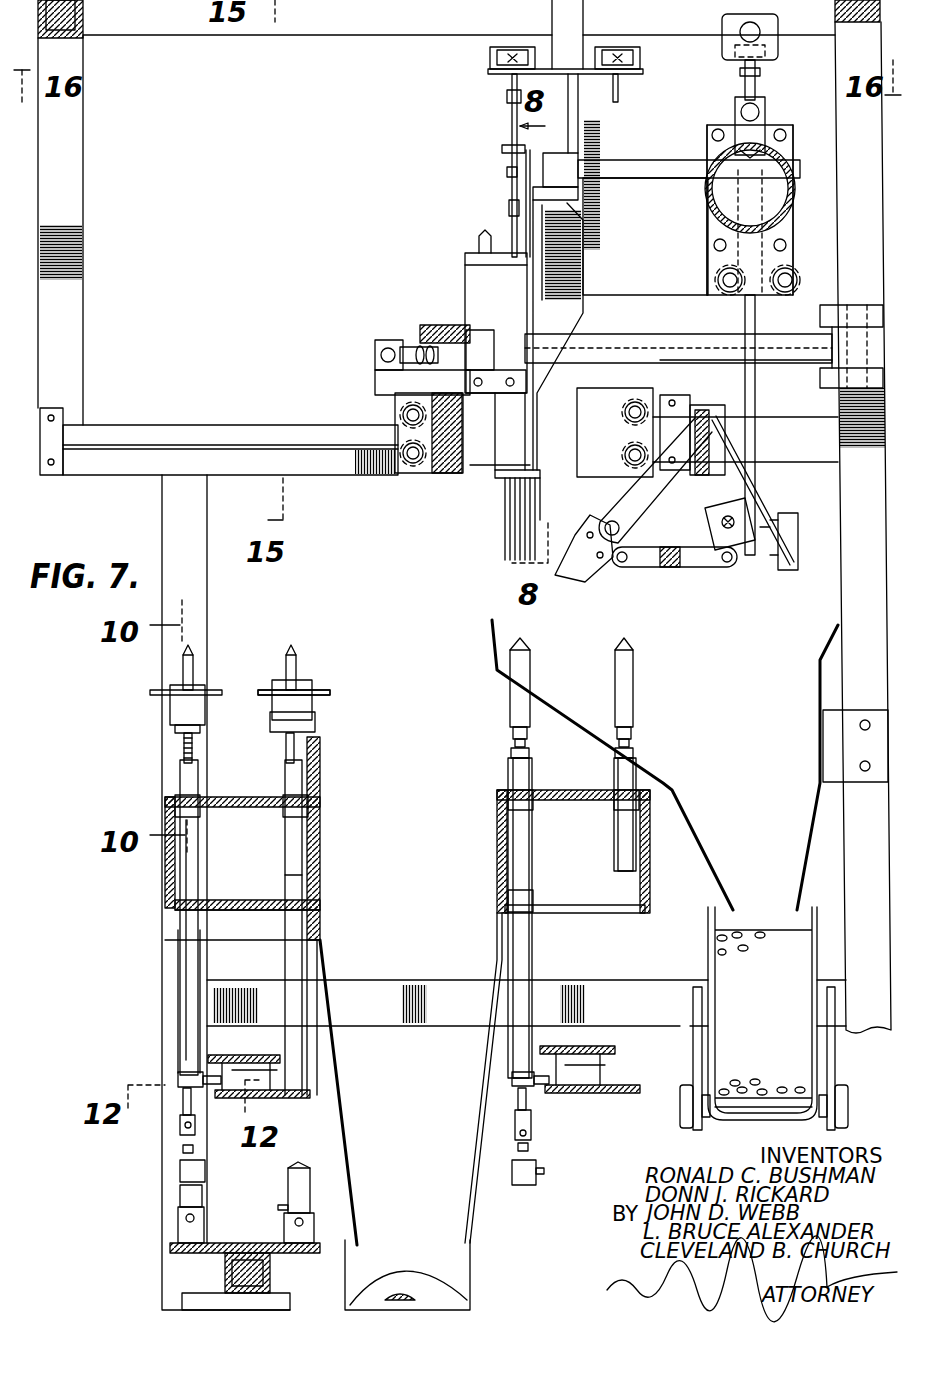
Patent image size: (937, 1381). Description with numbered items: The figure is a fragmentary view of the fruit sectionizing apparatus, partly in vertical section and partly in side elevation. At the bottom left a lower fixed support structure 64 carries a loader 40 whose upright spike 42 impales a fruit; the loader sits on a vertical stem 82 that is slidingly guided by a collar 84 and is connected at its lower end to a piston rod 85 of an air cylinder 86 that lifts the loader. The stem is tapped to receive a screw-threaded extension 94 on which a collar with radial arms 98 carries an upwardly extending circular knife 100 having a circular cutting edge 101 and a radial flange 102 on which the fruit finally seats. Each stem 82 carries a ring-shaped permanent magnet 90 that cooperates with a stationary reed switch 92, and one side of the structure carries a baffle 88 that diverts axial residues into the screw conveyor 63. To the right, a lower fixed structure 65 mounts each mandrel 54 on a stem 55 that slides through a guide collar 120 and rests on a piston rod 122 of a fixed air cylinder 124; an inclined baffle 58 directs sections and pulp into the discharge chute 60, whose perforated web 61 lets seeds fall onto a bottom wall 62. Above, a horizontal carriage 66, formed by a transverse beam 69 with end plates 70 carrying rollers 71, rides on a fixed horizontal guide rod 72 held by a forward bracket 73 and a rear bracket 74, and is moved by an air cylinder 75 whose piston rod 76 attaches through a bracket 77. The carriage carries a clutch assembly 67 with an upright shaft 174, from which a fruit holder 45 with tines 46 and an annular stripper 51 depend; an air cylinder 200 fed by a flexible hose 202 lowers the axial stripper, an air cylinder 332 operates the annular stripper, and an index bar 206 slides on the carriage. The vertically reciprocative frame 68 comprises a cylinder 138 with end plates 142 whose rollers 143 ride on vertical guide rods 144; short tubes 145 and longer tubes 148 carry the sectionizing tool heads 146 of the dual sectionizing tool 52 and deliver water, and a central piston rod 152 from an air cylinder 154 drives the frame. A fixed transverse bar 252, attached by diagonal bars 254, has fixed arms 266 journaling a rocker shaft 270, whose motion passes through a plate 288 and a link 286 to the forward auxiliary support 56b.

The air cylinder 154 is at (720, 14).
The central piston rod 152 is at (740, 78).
The end plates 142 is at (785, 108).
The vertical reciprocative frame 68 is at (707, 135).
The short horizontal tubes 145 is at (705, 168).
The cylinder 138 is at (705, 196).
The longer horizontal tubes 148 is at (648, 178).
The rollers 143 is at (715, 282).
The vertical guide rods 144 is at (757, 318).
The sectionizing tool heads 146 is at (565, 162).
The air cylinder 200 is at (503, 180).
The flexible hose 202 is at (502, 148).
The air cylinder 332 is at (509, 208).
The clutch assemblies 67 is at (465, 265).
The index bar 206 is at (440, 325).
The piston rods 76 is at (408, 347).
The brackets 77 is at (378, 380).
The upright shaft 174 is at (480, 372).
The dual sectionizing tool 52 is at (583, 290).
The air cylinders 75 is at (628, 334).
The bracket 73 is at (63, 415).
The horizontal guide rods 72 is at (140, 432).
The transverse beam 69 is at (412, 475).
The horizontal carriage 66 is at (450, 478).
The rollers 71 is at (400, 415).
The end plates 70 is at (608, 470).
The bracket 74 is at (676, 396).
The fixed transverse bar 252 is at (718, 400).
The diagonal bars 254 is at (762, 482).
The fixed arms 266 is at (690, 448).
The auxiliary support 56b is at (583, 570).
The rocker shaft 270 is at (685, 568).
The link 286 is at (722, 568).
The plate 288 is at (786, 570).
The fruit holder 45 is at (503, 510).
The tines 46 is at (503, 540).
The annular stripper 51 is at (540, 490).
The loader 40 is at (160, 690).
The upright spike 42 is at (195, 672).
The circular knife 100 is at (175, 700).
The screw-threaded extension 94 is at (192, 745).
The circular cutting edge 101 is at (312, 685).
The radial flange 102 is at (312, 693).
The radial arms 98 is at (312, 720).
The collar 84 is at (283, 798).
The vertical stem 82 is at (292, 855).
The lower fixed support structure 64 is at (165, 880).
The reed switch 92 is at (178, 1078).
The permanent magnet 90 is at (185, 1095).
The piston rod 85 is at (180, 1168).
The air cylinder 86 is at (290, 1190).
The baffle 88 is at (340, 1115).
The screw conveyor 63 is at (413, 1262).
The lower fixed structure 65 is at (650, 856).
The mandrel 54 is at (620, 672).
The stem 55 is at (622, 850).
The guide collar 120 is at (614, 798).
The inclined baffle 58 is at (662, 780).
The piston rod 122 is at (533, 1150).
The air cylinder 124 is at (515, 1182).
The discharge chute 60 is at (816, 952).
The web 61 is at (758, 935).
The bottom wall 62 is at (768, 1115).